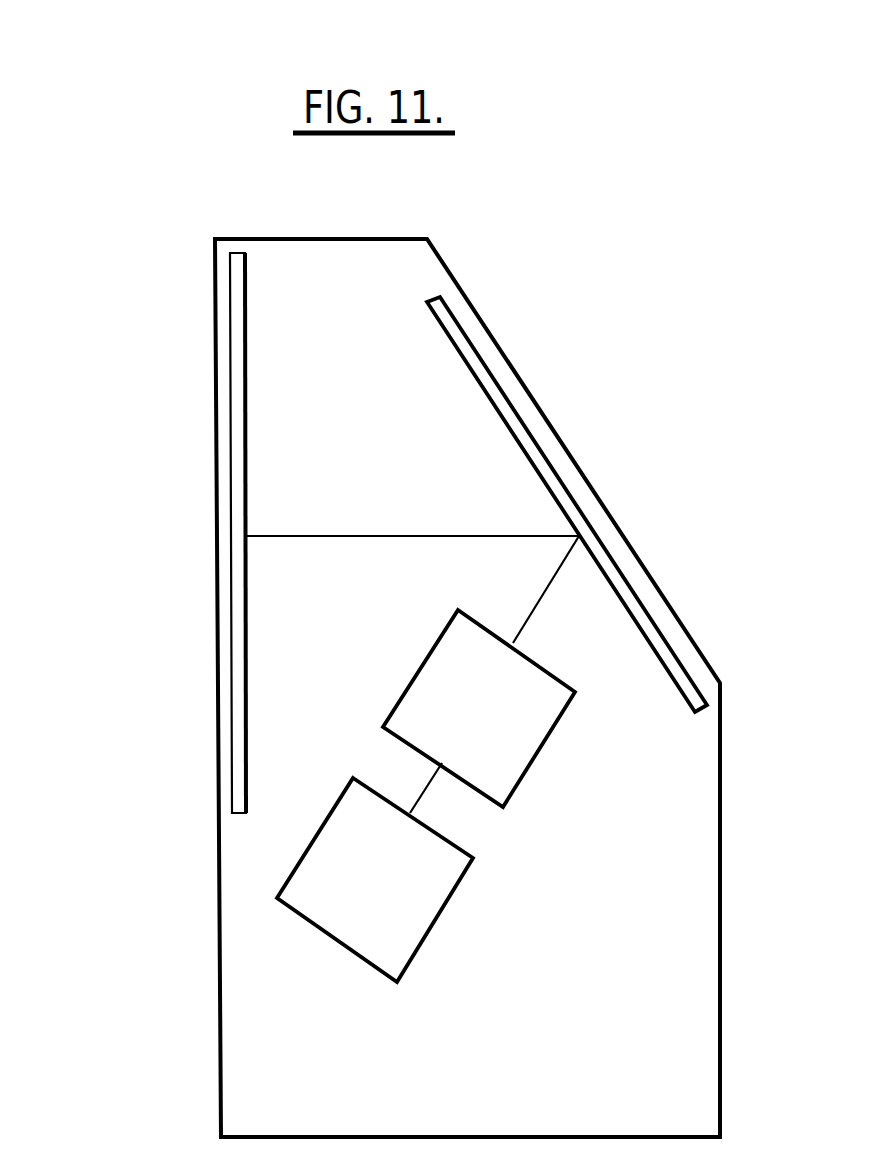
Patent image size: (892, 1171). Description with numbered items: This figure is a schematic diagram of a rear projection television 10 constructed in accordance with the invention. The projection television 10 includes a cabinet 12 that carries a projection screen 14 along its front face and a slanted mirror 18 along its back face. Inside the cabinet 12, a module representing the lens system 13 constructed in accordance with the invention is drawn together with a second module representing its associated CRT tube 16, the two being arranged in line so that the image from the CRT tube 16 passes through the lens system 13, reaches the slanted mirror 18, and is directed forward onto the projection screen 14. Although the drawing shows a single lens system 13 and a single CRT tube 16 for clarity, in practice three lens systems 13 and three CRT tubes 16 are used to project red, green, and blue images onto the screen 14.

The rear projection television 10 is at (138, 766).
The cabinet 12 is at (722, 875).
The lens system 13 is at (536, 750).
The projection screen 14 is at (247, 385).
The CRT tube 16 is at (440, 922).
The slanted mirror 18 is at (481, 389).